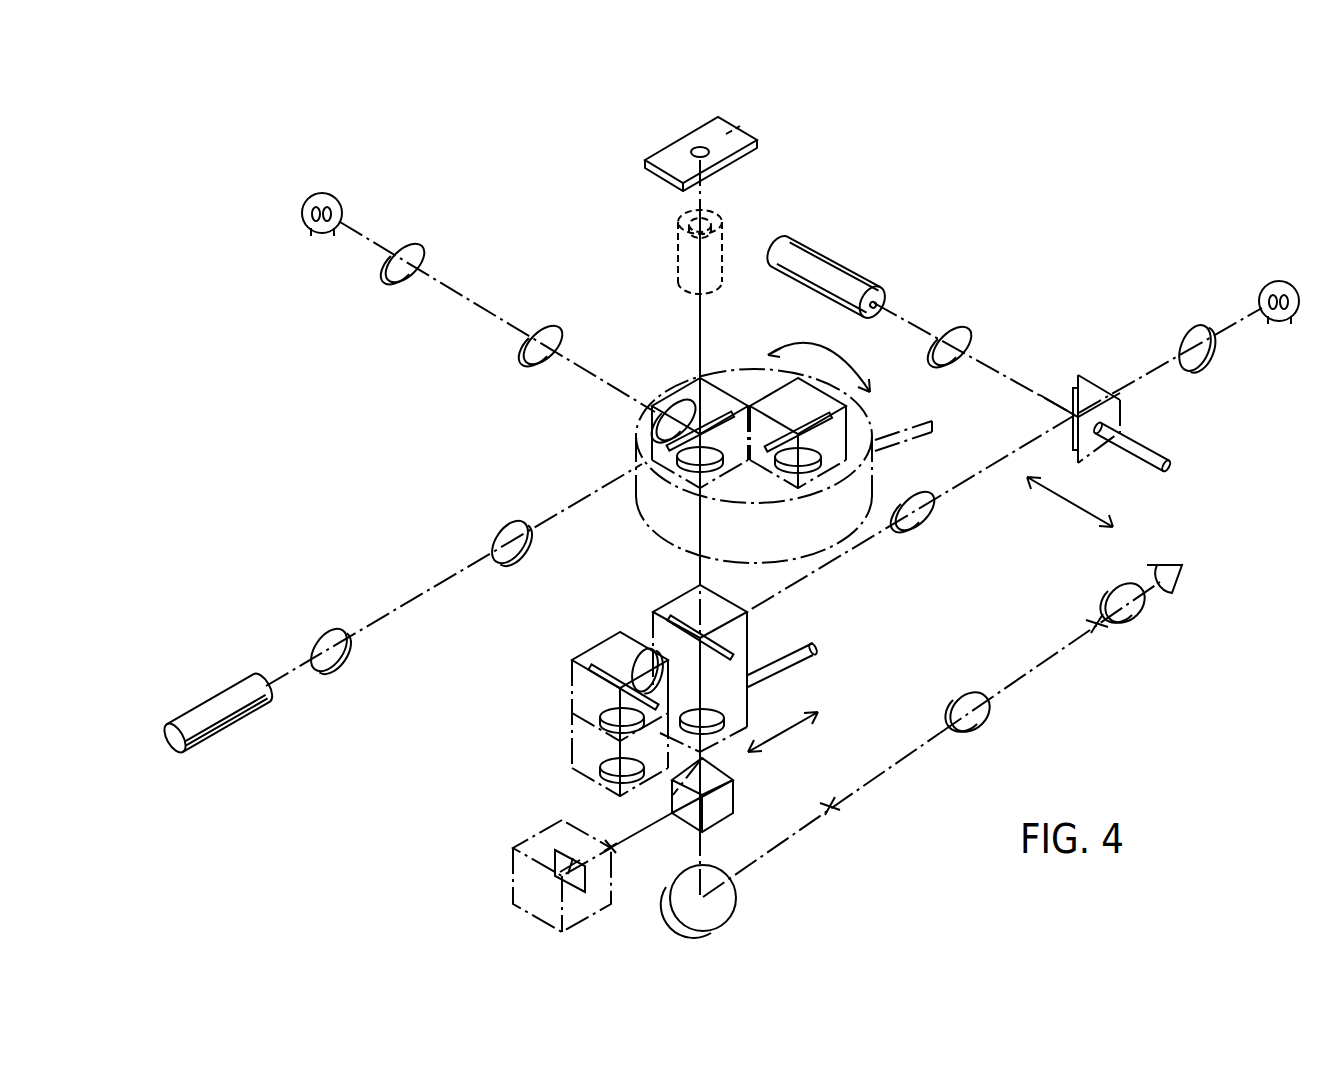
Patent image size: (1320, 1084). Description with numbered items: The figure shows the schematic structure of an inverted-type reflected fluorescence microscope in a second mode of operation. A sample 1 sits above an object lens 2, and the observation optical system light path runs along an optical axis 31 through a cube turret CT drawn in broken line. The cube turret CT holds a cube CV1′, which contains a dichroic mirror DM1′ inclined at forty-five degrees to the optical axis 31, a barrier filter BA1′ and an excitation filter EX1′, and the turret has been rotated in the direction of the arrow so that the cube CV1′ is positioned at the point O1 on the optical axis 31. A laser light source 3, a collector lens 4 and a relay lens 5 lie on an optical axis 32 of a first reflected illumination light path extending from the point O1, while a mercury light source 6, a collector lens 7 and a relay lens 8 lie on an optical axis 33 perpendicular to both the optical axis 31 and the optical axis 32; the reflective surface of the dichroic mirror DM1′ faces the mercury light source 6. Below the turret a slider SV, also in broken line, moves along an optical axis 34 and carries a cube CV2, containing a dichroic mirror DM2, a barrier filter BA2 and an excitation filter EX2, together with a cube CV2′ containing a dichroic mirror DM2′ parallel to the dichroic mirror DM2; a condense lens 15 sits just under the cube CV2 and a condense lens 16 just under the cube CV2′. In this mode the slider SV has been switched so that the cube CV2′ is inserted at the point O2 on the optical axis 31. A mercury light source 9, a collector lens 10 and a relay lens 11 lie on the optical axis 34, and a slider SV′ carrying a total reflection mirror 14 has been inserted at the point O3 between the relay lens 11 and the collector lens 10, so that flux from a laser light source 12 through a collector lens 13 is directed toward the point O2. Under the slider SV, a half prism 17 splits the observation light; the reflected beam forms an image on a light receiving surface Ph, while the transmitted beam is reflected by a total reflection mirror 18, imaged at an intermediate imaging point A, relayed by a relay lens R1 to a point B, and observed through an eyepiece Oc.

The sample 1 is at (672, 166).
The object lens 2 is at (719, 215).
The laser light source 3 is at (238, 694).
The collector lens 4 is at (327, 630).
The relay lens 5 is at (502, 519).
The mercury light source 6 is at (343, 207).
The collector lens 7 is at (425, 257).
The relay lens 8 is at (562, 332).
The mercury light source 9 is at (1276, 283).
The collector lens 10 is at (1182, 330).
The relay lens 11 is at (936, 523).
The laser light source 12 is at (830, 268).
The collector lens 13 is at (958, 330).
The total reflection mirror 14 is at (1070, 402).
The condense lens 15 is at (602, 780).
The condense lens 16 is at (735, 701).
The half prism 17 is at (672, 796).
The total reflection mirror 18 is at (730, 898).
The optical axis 31 is at (706, 308).
The optical axis 32 is at (405, 586).
The optical axis 33 is at (456, 300).
The optical axis 34 is at (892, 536).
The point O1 is at (702, 437).
The point O2 is at (698, 632).
The point O3 is at (1068, 416).
The cube turret CT is at (656, 526).
The cube CV1′ is at (678, 396).
The excitation filter EX1′ is at (664, 417).
The dichroic mirror DM1′ is at (662, 441).
The barrier filter BA1′ is at (690, 474).
The slider SV′ is at (1122, 433).
The cube CV2 is at (570, 662).
The cube CV2′ is at (772, 619).
The excitation filter EX2 is at (637, 655).
The dichroic mirror DM2 is at (600, 664).
The dichroic mirror DM2′ is at (748, 641).
The barrier filter BA2 is at (600, 713).
The slider SV is at (570, 752).
The light receiving surface Ph is at (558, 850).
The intermediate imaging point A is at (836, 810).
The point B is at (1100, 637).
The relay lens R1 is at (990, 720).
The eyepiece Oc is at (1140, 620).